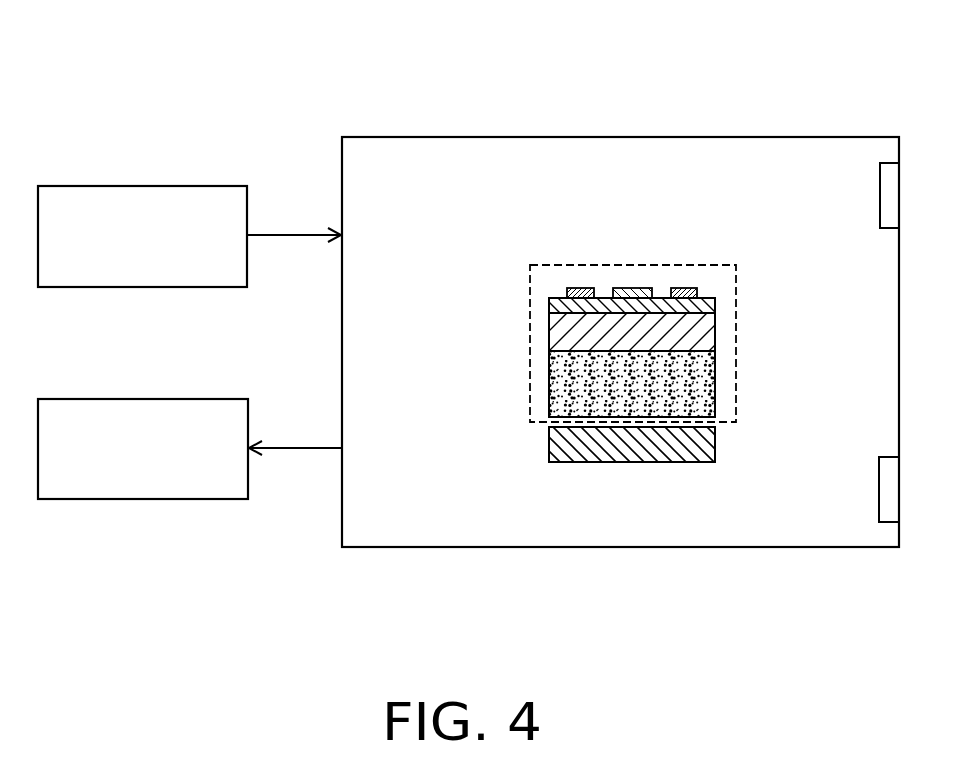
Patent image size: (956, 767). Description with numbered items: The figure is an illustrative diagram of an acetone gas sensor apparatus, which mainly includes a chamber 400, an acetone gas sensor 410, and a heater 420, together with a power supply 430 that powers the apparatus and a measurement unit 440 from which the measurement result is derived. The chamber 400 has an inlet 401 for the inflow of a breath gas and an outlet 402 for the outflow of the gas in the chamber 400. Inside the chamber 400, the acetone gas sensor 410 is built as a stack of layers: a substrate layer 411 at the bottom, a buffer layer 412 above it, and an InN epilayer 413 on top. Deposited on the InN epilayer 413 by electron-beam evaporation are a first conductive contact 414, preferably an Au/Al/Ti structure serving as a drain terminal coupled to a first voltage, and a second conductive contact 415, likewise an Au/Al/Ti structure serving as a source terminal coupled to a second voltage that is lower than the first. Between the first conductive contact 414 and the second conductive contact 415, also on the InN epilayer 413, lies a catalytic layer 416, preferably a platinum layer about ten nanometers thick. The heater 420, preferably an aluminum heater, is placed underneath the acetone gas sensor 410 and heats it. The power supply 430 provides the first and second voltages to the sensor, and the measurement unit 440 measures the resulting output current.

The chamber 400 is at (688, 137).
The inlet 401 is at (885, 183).
The outlet 402 is at (887, 492).
The acetone gas sensor 410 is at (718, 264).
The substrate layer 411 is at (715, 386).
The buffer layer 412 is at (715, 335).
The InN epilayer 413 is at (715, 305).
The first conductive contact 414 is at (682, 288).
The second conductive contact 415 is at (581, 288).
The catalytic layer 416 is at (635, 288).
The heater 420 is at (715, 438).
The power supply 430 is at (148, 186).
The measurement unit 440 is at (145, 399).